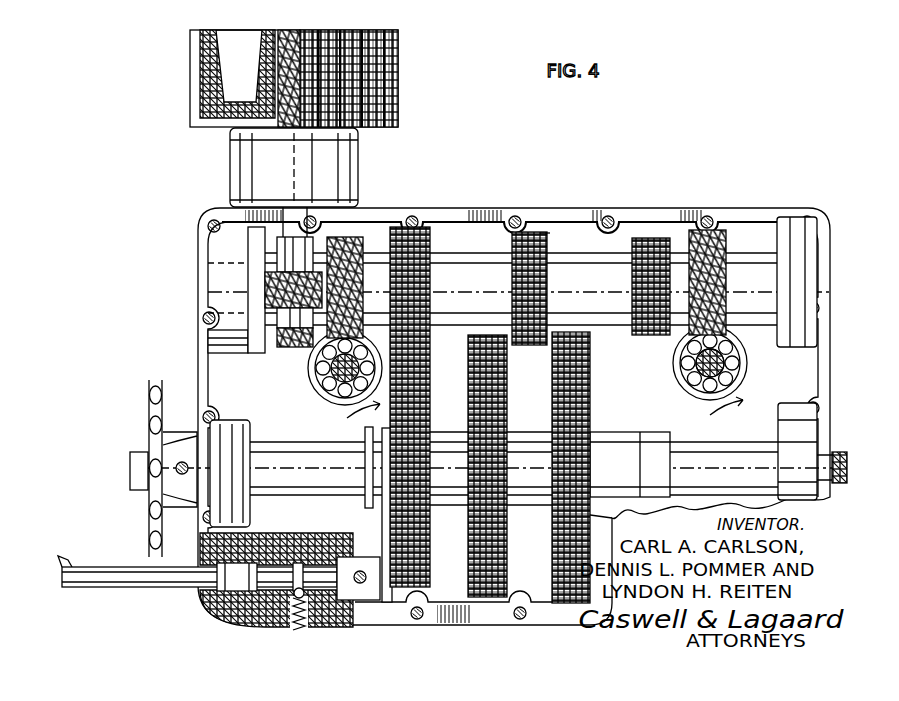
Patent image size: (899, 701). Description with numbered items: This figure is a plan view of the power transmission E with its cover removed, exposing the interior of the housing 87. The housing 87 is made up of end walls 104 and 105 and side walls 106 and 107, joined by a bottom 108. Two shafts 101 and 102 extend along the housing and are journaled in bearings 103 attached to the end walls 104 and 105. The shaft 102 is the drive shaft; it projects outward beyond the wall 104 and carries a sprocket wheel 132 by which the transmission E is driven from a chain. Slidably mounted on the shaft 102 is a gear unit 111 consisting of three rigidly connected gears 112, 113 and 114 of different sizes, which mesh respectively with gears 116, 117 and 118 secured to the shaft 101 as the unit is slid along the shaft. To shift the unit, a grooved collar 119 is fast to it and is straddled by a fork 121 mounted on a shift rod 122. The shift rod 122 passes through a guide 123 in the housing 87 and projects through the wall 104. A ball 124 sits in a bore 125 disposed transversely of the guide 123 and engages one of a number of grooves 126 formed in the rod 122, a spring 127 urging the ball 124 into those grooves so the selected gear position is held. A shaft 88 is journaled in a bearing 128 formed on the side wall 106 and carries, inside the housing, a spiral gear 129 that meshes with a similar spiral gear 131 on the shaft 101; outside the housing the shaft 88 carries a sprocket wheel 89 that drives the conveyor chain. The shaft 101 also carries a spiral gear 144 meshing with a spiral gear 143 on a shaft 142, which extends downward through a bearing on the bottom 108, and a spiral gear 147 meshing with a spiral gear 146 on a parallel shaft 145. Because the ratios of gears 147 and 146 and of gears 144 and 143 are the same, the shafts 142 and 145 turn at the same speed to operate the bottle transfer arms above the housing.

The housing 87 is at (735, 208).
The shaft 88 is at (287, 53).
The sprocket wheel 89 is at (367, 75).
The shaft 101 is at (818, 267).
The drive shaft 102 is at (318, 477).
The bearings 103 is at (222, 338).
The end wall 104 is at (203, 300).
The end wall 105 is at (823, 377).
The side wall 106 is at (640, 212).
The side wall 107 is at (487, 620).
The bottom 108 is at (482, 235).
The gear unit 111 is at (443, 505).
The gear 112 is at (418, 580).
The gear 113 is at (475, 372).
The gear 114 is at (553, 403).
The gear 116 is at (410, 258).
The gear 117 is at (535, 265).
The gear 118 is at (645, 248).
The grooved collar 119 is at (342, 457).
The fork 121 is at (378, 528).
The shift rod 122 is at (155, 582).
The guide 123 is at (238, 563).
The ball 124 is at (303, 580).
The bore 125 is at (300, 593).
The grooves 126 is at (255, 588).
The spring 127 is at (318, 617).
The bearing 128 is at (252, 162).
The spiral gear 129 is at (273, 272).
The spiral gear 131 is at (278, 348).
The sprocket wheel 132 is at (150, 508).
The shaft 142 is at (700, 362).
The spiral gear 143 is at (698, 380).
The spiral gear 144 is at (710, 250).
The shaft 145 is at (343, 387).
The spiral gear 146 is at (322, 367).
The spiral gear 147 is at (353, 237).
The transmission E is at (545, 233).